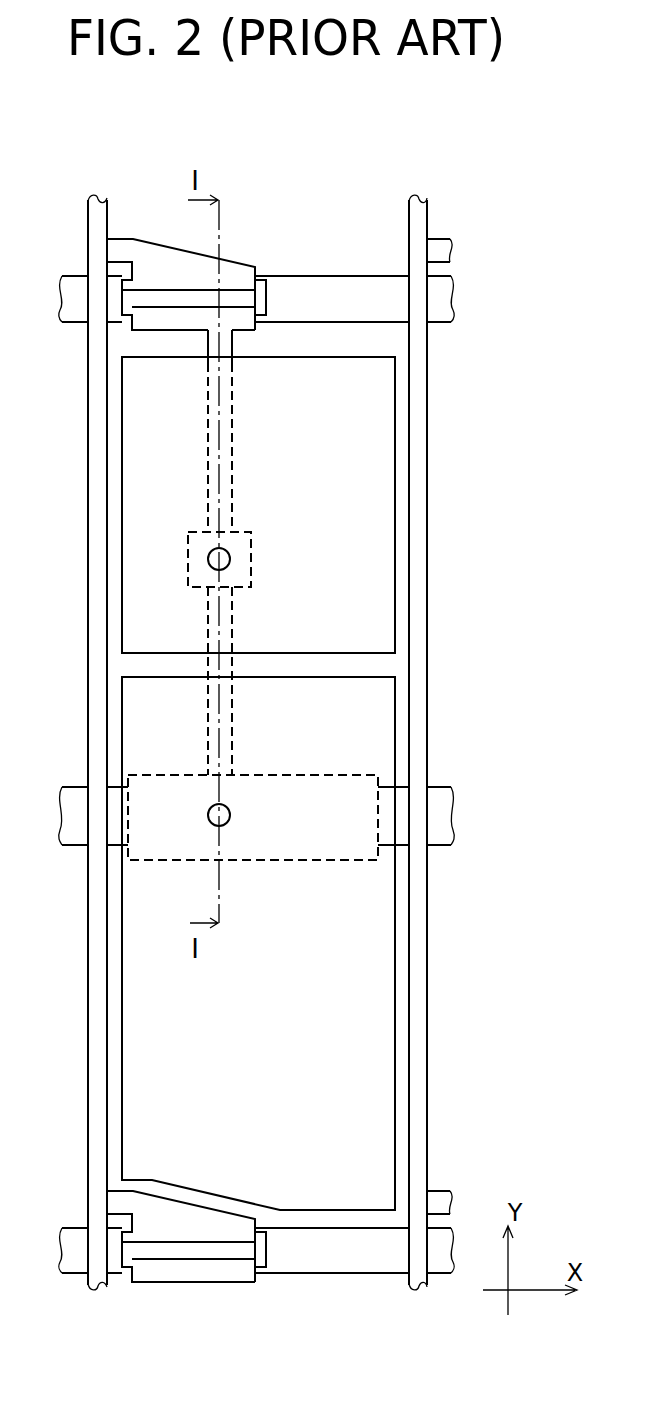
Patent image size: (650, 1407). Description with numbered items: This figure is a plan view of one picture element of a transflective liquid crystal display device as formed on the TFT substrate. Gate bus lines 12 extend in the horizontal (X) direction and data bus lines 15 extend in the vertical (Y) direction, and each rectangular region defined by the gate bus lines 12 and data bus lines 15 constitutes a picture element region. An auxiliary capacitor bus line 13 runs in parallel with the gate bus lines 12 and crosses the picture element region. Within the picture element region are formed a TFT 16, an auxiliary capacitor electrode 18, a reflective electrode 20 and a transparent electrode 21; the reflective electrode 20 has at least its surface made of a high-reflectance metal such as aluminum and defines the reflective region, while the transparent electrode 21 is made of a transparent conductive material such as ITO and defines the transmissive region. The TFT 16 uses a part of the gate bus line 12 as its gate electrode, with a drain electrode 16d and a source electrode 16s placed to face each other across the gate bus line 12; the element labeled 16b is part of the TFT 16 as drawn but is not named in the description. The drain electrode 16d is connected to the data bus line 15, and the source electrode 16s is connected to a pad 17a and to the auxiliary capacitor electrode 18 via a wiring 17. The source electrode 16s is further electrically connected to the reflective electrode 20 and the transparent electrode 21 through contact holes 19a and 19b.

The gate bus line 12 is at (67, 286).
The auxiliary capacitor bus line 13 is at (80, 790).
The data bus line 15 is at (88, 413).
The TFT 16 is at (219, 719).
The drain electrode 16d is at (152, 250).
The source electrode 16s is at (148, 322).
The semiconductor layer 16b is at (260, 295).
The wiring 17 is at (232, 438).
The pad 17a is at (250, 543).
The auxiliary capacitor electrode 18 is at (300, 862).
The contact hole 19a is at (209, 553).
The contact hole 19b is at (208, 815).
The reflective electrode 20 is at (385, 607).
The transparent electrode 21 is at (385, 983).